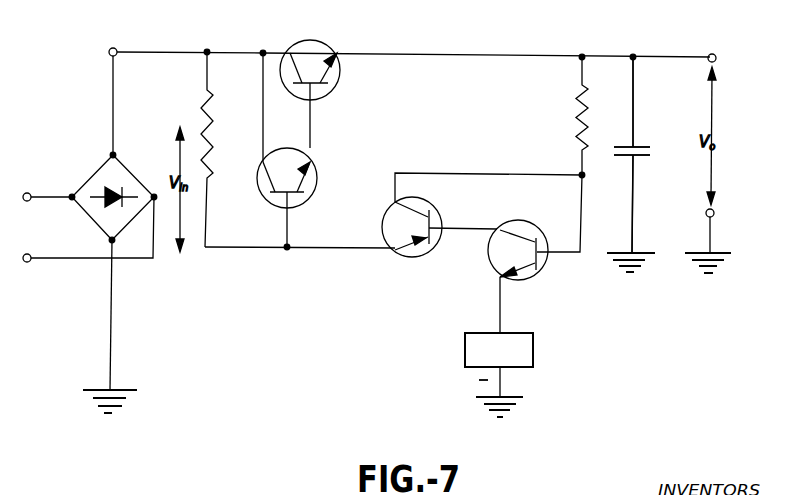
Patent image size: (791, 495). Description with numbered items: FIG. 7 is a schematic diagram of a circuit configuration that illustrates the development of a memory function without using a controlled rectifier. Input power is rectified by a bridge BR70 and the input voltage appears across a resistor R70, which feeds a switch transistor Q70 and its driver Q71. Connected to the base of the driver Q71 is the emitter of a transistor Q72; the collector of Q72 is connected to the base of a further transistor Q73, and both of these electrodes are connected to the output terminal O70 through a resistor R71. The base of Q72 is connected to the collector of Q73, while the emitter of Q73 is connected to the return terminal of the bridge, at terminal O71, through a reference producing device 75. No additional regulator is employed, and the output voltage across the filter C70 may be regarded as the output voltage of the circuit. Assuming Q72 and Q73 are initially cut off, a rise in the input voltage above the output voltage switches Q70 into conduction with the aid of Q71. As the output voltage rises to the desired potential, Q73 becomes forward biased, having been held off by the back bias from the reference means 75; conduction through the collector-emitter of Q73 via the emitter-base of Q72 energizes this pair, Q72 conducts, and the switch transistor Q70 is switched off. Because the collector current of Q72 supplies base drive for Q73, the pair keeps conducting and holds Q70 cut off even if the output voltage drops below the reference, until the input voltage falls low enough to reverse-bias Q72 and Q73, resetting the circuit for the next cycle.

The bridge rectifier BR70 is at (102, 197).
The resistor R70 is at (218, 149).
The resistor R71 is at (564, 116).
The filter C70 is at (640, 155).
The switch transistor Q70 is at (325, 94).
The driver Q71 is at (300, 197).
The transistor Q72 is at (426, 227).
The further transistor Q73 is at (530, 276).
The reference producing device 75 is at (533, 356).
The output terminal O70 is at (715, 55).
The output terminal O71 is at (714, 214).